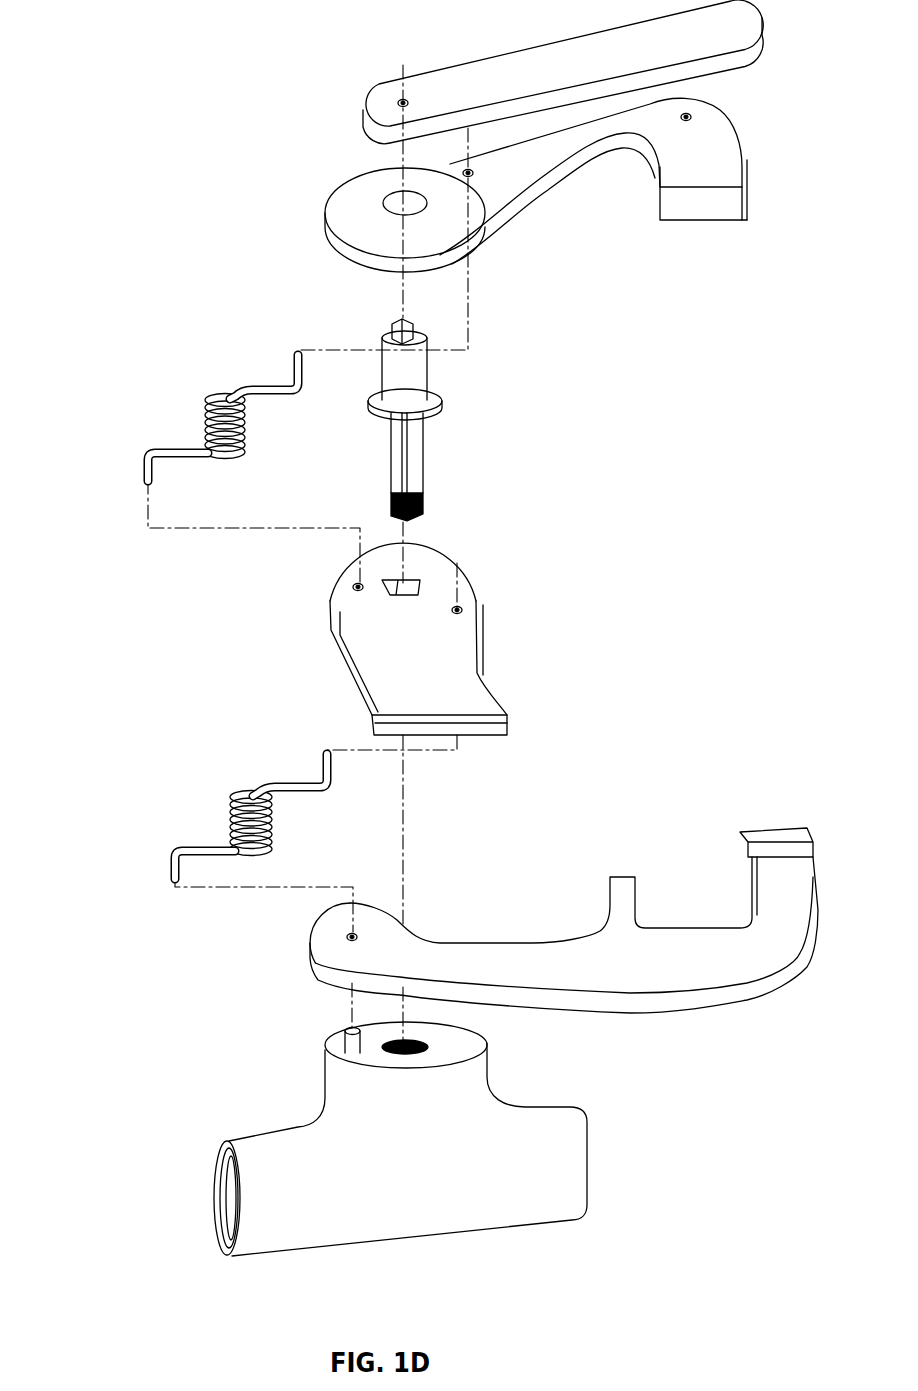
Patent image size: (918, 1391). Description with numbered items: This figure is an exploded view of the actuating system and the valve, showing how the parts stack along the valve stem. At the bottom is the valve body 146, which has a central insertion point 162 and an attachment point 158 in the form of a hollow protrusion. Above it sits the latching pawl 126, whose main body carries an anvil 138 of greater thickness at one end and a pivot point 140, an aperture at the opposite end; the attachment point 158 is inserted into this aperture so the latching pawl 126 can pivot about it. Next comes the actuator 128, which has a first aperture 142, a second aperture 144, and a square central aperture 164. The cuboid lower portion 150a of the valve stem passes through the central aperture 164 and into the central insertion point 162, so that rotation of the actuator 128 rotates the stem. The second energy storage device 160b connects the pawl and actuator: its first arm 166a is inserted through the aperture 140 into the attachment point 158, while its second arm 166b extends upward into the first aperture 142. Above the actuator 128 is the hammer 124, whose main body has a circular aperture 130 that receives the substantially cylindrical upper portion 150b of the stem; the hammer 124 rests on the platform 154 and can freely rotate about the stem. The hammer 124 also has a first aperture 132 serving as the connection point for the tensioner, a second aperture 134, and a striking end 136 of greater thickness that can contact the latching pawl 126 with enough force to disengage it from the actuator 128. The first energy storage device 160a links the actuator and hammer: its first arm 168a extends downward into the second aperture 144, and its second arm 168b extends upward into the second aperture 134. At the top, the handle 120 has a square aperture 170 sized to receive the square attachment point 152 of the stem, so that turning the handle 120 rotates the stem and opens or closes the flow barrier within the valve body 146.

The handle 120 is at (447, 68).
The square aperture 170 is at (400, 98).
The circular aperture 130 is at (385, 203).
The first aperture 132 is at (690, 117).
The hammer 124 is at (530, 200).
The second aperture 134 is at (469, 180).
The striking end 136 is at (688, 222).
The square attachment point 152 is at (390, 324).
The upper portion 150b is at (427, 353).
The platform 154 is at (442, 407).
The lower portion 150a is at (423, 455).
The first energy storage device 160a is at (212, 397).
The first arm 168a is at (147, 456).
The second arm 168b is at (273, 394).
The actuator 128 is at (483, 677).
The second aperture 144 is at (357, 587).
The first aperture 142 is at (461, 611).
The central aperture 164 is at (422, 588).
The second energy storage device 160b is at (237, 798).
The first arm 166a is at (172, 866).
The second arm 166b is at (287, 784).
The latching pawl 126 is at (622, 875).
The anvil 138 is at (763, 828).
The pivot point 140 is at (350, 937).
The valve body 146 is at (588, 1188).
The central insertion point 162 is at (424, 1050).
The attachment point 158 is at (346, 1033).